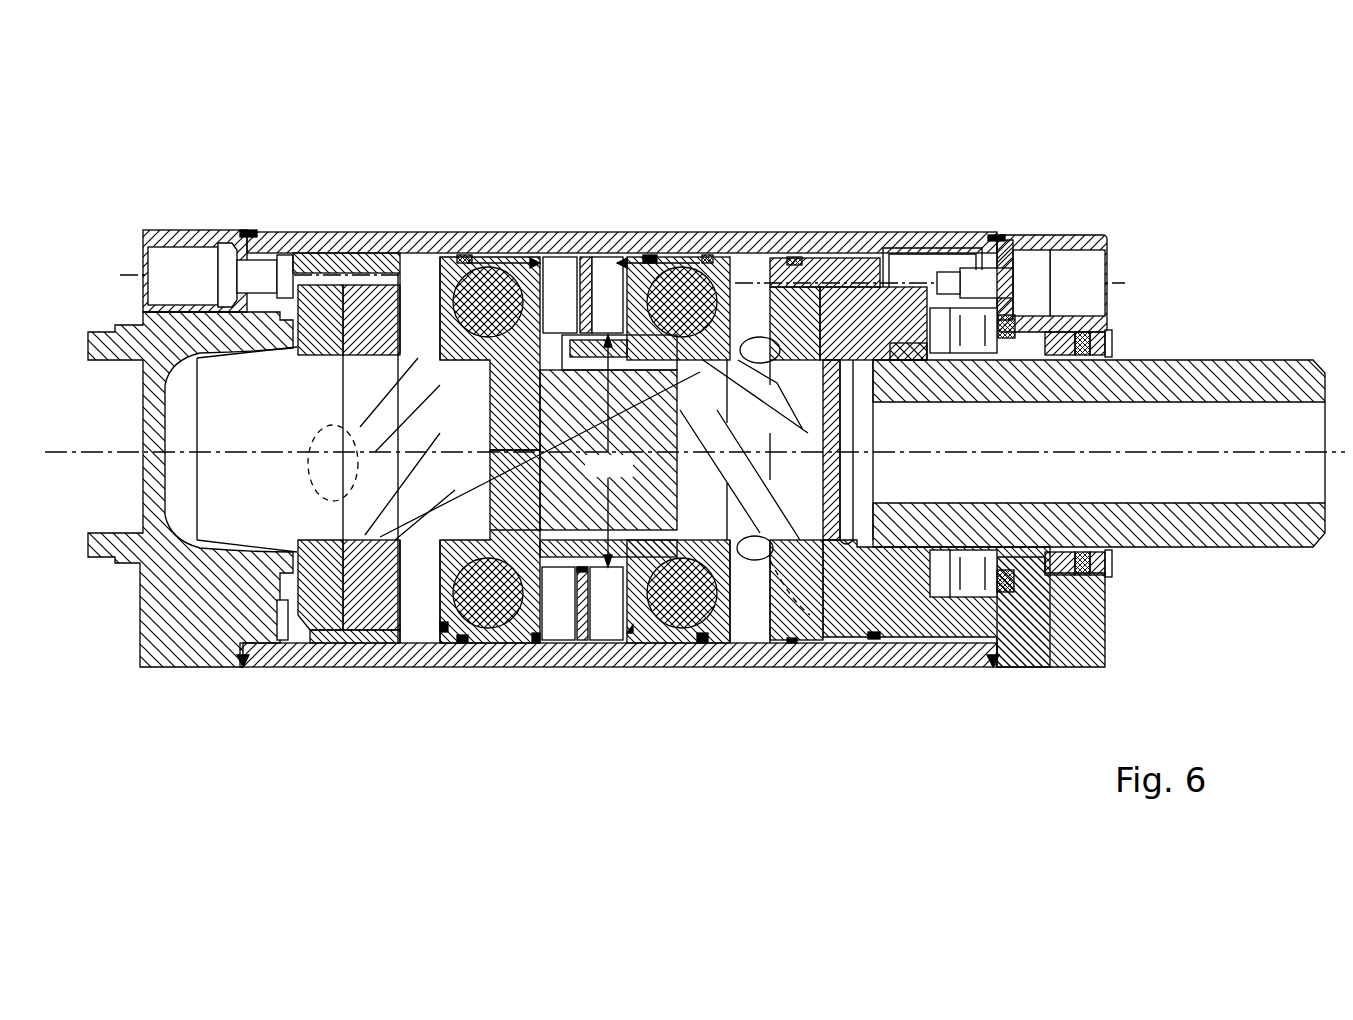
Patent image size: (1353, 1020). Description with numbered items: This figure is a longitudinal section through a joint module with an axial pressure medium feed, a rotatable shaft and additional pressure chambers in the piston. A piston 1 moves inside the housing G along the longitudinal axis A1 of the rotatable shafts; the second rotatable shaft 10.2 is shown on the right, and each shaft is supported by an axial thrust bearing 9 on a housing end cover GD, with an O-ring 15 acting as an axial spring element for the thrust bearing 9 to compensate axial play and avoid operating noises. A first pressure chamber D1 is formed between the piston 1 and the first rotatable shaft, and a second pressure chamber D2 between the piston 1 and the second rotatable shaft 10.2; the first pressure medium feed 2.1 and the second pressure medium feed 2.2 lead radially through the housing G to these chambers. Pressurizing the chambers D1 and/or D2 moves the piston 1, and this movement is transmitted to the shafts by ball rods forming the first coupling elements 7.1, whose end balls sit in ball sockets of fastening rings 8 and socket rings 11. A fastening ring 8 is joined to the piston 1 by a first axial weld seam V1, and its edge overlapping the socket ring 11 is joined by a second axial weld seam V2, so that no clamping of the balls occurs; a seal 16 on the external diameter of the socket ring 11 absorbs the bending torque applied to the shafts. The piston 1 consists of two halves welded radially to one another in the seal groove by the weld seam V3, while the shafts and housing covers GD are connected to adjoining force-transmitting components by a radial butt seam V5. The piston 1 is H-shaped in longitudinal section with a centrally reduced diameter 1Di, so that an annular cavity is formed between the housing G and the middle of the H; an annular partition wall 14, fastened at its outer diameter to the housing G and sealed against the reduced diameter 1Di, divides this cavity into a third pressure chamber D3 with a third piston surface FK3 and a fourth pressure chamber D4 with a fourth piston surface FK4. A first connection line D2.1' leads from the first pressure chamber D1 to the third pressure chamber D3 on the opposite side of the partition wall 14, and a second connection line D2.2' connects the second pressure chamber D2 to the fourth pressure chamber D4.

The longitudinal axis A1 is at (1158, 455).
The housing G is at (274, 238).
The housing cover GD is at (122, 237).
The first pressure medium feed 2.1 is at (183, 263).
The second pressure medium feed 2.2 is at (1040, 268).
The first coupling elements 7.1 is at (390, 262).
The fastening ring 8 is at (723, 278).
The first pressure chamber D1 is at (423, 280).
The piston 1 is at (533, 295).
The first connection line D2.1' is at (501, 610).
The fourth pressure chamber D4 is at (558, 290).
The partition wall 14 is at (586, 283).
The third piston surface FK3 is at (540, 263).
The fourth piston surface FK4 is at (617, 263).
The second connection line D2.2' is at (678, 231).
The second pressure chamber D2 is at (747, 606).
The first axial weld seam V1 is at (543, 570).
The weld seam V3 is at (555, 570).
The third pressure chamber D3 is at (606, 604).
The reduced diameter 1Di is at (607, 451).
The socket ring 11 is at (310, 650).
The second rotatable shaft 10.2 is at (1180, 512).
The axial thrust bearing 9 is at (943, 328).
The seal 16 is at (907, 625).
The O-ring 15 is at (1003, 578).
The second axial weld seam V2 is at (292, 587).
The radial butt seam V5 is at (243, 662).